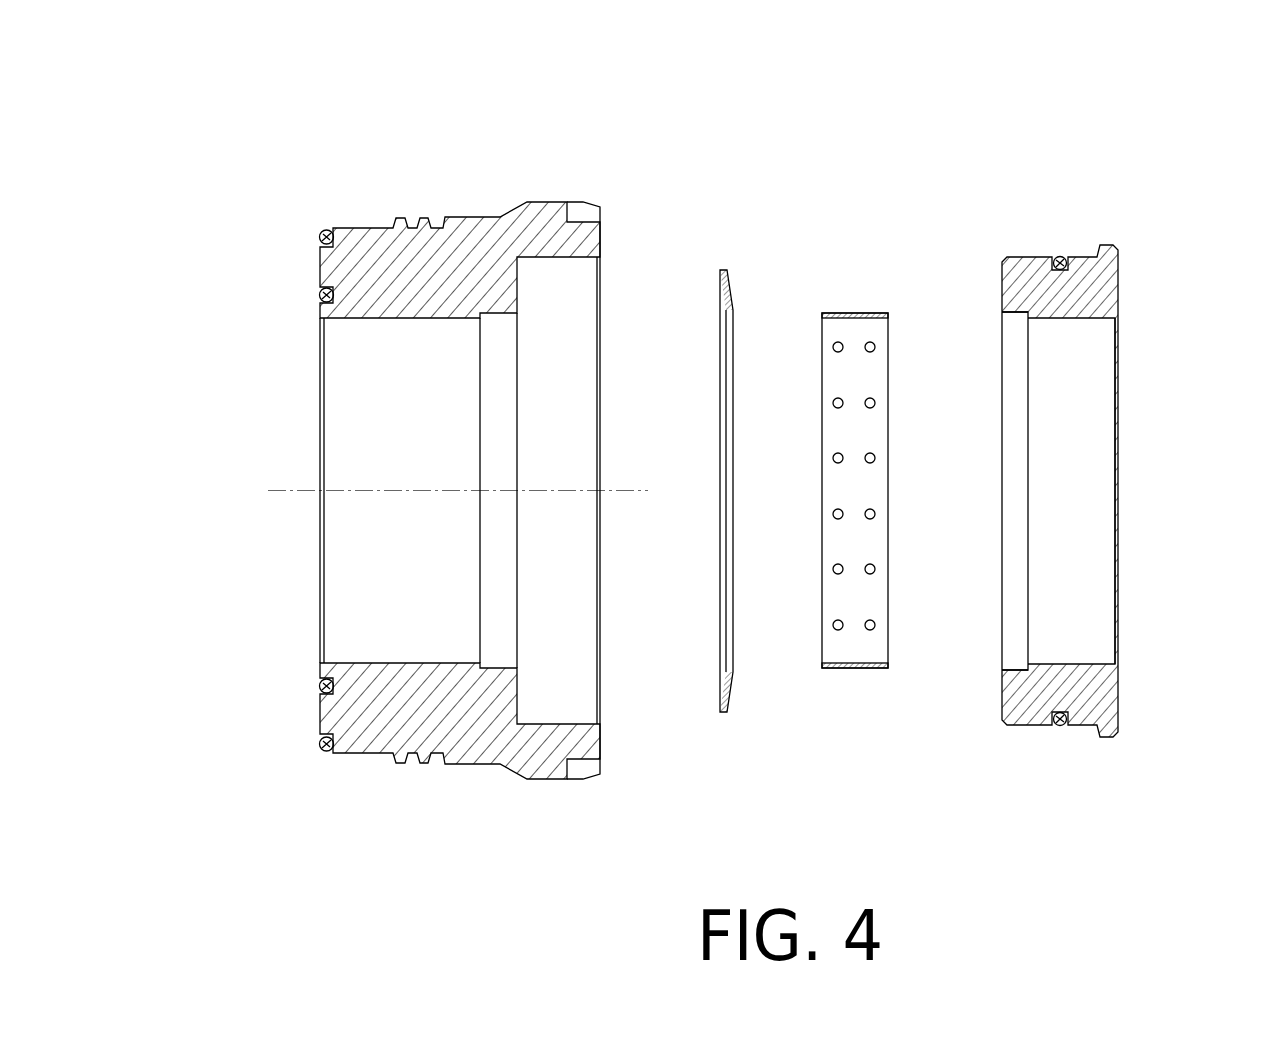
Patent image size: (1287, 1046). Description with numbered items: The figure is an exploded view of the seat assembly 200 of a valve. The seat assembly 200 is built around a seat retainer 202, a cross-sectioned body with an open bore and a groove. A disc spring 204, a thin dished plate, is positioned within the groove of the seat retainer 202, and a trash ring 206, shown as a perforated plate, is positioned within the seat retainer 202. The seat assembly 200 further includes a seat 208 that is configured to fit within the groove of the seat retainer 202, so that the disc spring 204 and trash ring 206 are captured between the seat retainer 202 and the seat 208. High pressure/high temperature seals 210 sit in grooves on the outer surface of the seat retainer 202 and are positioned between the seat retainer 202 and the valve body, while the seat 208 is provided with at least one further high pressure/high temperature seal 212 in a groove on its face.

The seat assembly 200 is at (929, 99).
The seat retainer 202 is at (352, 452).
The disc spring 204 is at (732, 288).
The trash ring 206 is at (857, 312).
The seat 208 is at (1082, 532).
The high pressure/high temperature seals 210 is at (320, 300).
The high pressure/high temperature seal 212 is at (1063, 727).